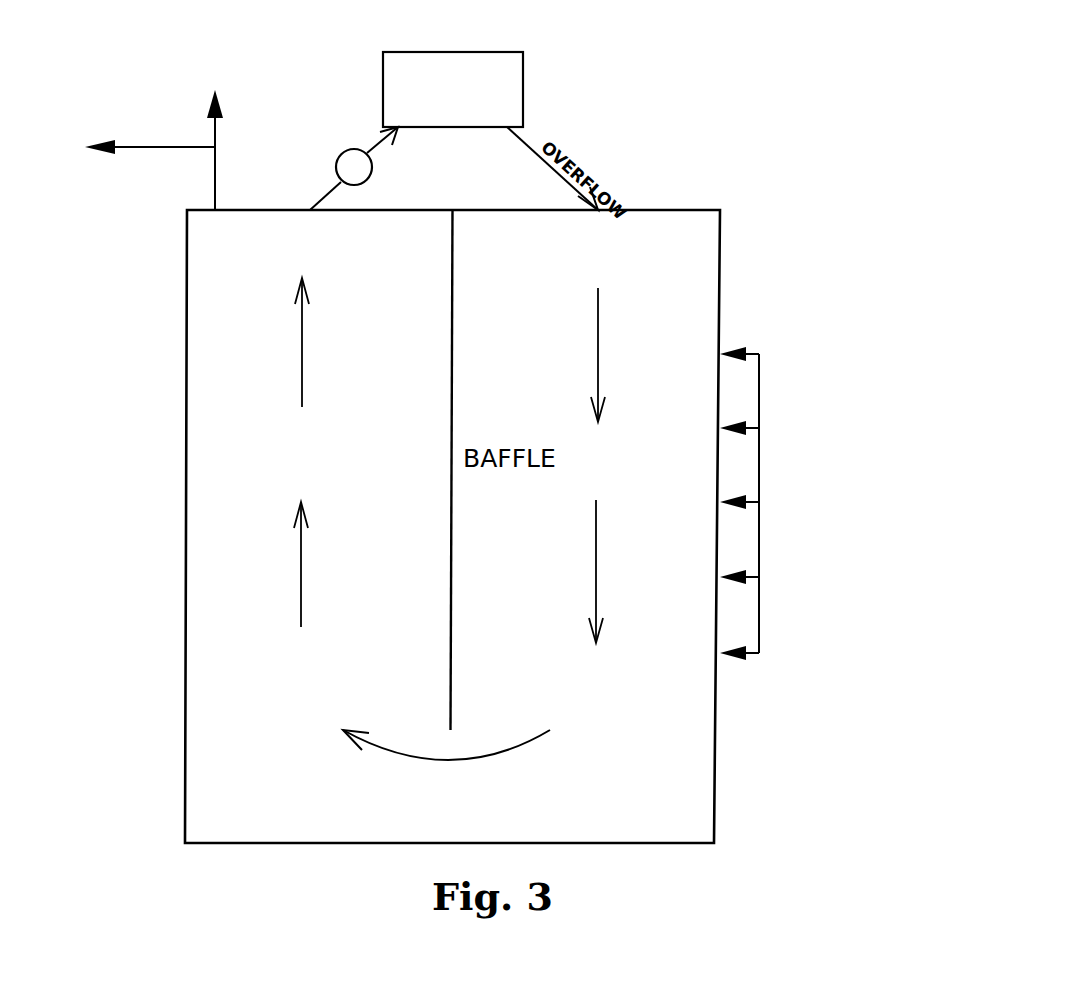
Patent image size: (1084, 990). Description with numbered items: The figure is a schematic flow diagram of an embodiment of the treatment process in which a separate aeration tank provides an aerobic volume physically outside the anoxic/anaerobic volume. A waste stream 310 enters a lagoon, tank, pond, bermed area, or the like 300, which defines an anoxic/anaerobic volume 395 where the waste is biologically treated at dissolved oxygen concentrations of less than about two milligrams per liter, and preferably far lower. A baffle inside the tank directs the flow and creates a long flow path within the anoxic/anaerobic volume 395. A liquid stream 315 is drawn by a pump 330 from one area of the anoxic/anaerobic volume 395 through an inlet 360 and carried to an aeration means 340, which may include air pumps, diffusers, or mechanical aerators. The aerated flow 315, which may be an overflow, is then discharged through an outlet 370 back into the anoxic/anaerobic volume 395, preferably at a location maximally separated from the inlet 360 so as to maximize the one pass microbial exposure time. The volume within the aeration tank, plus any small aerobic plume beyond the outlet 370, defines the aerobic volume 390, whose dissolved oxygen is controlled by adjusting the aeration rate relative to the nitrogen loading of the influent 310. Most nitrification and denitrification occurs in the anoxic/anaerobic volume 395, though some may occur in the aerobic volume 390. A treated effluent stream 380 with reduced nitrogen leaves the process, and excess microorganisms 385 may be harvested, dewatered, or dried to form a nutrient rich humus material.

The lagoon, tank, pond, or bermed area 300 is at (742, 203).
The waste stream 310 is at (759, 502).
The liquid stream 315 is at (307, 535).
The pump 330 is at (344, 165).
The aeration means 340 is at (458, 71).
The inlet 360 is at (307, 314).
The outlet 370 is at (596, 322).
The treated effluent stream 380 is at (232, 137).
The excess microorganisms 385 is at (150, 127).
The aerobic volume 390 is at (456, 87).
The anoxic/anaerobic volume 395 is at (446, 773).